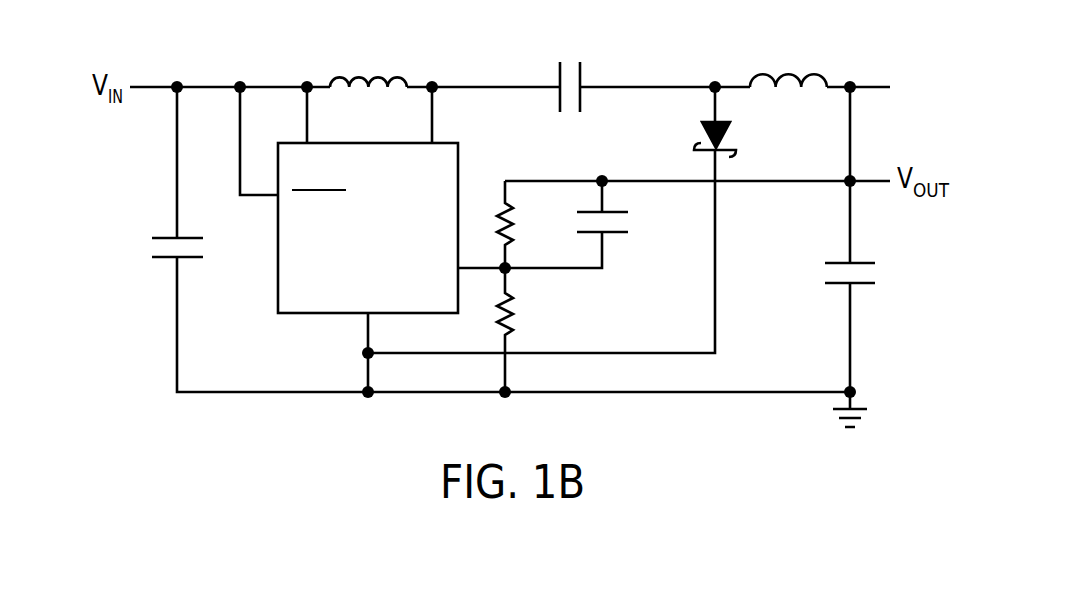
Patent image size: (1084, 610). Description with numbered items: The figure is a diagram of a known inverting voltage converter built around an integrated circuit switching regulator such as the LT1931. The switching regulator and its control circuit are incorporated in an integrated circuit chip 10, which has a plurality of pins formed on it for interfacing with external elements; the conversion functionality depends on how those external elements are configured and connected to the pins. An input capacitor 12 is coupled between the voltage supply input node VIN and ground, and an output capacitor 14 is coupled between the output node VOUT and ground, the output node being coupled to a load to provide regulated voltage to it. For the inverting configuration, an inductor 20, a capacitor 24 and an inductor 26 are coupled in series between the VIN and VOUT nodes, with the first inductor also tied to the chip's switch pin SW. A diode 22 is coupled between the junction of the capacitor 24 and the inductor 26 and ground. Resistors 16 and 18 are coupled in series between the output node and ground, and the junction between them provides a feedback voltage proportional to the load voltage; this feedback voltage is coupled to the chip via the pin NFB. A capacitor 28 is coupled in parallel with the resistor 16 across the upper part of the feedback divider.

The integrated circuit chip 10 is at (278, 275).
The input capacitor 12 is at (172, 259).
The output capacitor 14 is at (865, 285).
The resistor 16 is at (503, 207).
The resistor 18 is at (515, 322).
The inductor 20 is at (360, 76).
The diode 22 is at (728, 128).
The capacitor 24 is at (583, 72).
The inductor 26 is at (773, 76).
The capacitor 28 is at (617, 234).